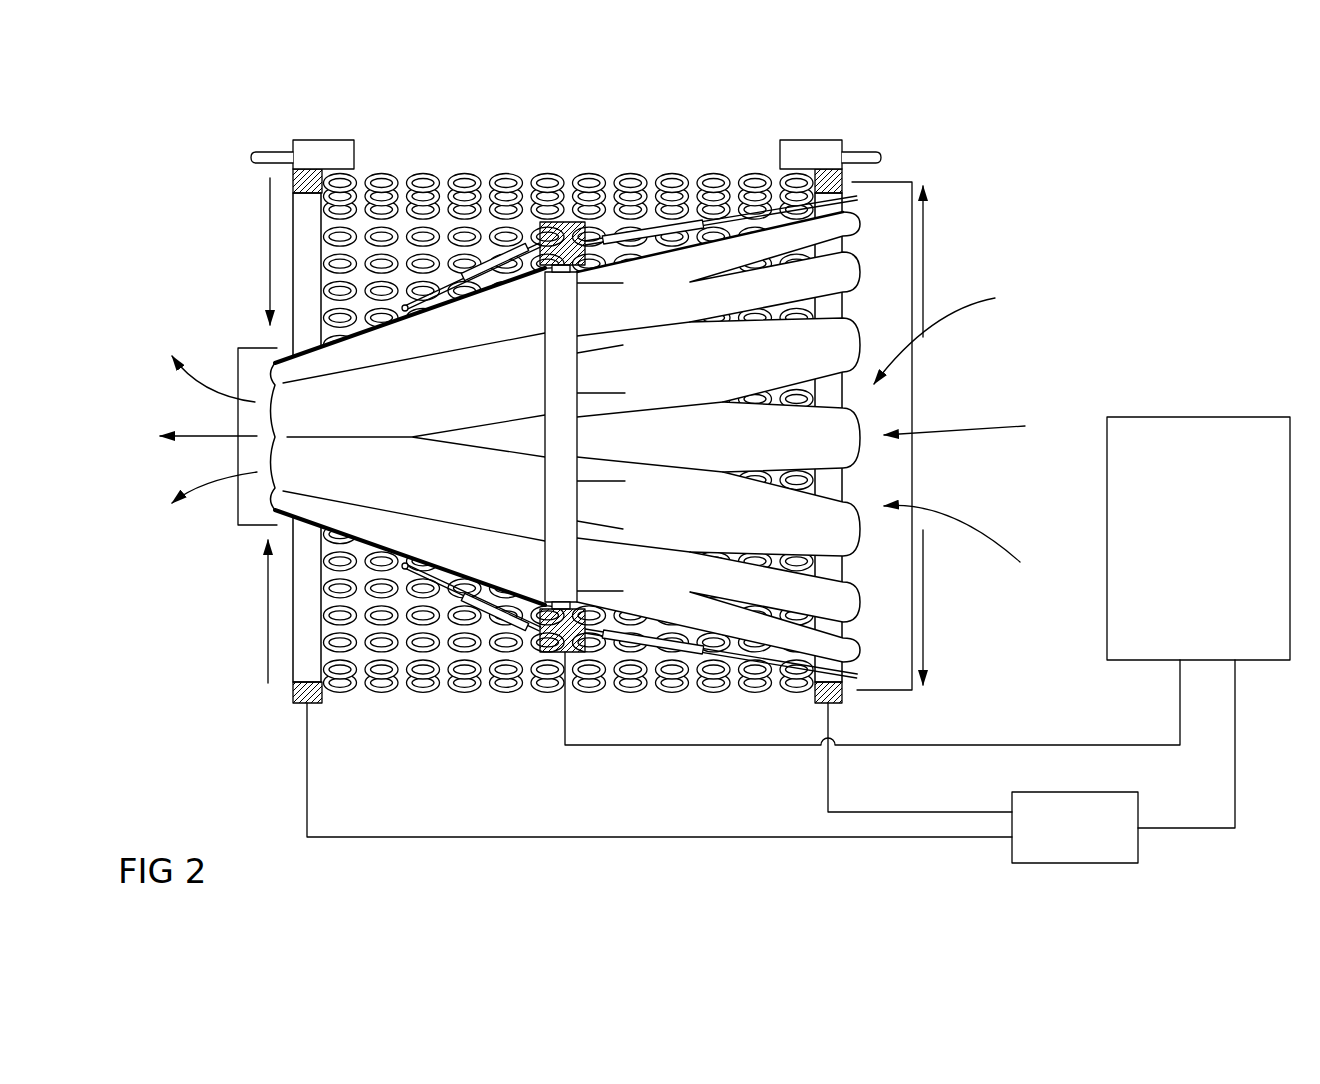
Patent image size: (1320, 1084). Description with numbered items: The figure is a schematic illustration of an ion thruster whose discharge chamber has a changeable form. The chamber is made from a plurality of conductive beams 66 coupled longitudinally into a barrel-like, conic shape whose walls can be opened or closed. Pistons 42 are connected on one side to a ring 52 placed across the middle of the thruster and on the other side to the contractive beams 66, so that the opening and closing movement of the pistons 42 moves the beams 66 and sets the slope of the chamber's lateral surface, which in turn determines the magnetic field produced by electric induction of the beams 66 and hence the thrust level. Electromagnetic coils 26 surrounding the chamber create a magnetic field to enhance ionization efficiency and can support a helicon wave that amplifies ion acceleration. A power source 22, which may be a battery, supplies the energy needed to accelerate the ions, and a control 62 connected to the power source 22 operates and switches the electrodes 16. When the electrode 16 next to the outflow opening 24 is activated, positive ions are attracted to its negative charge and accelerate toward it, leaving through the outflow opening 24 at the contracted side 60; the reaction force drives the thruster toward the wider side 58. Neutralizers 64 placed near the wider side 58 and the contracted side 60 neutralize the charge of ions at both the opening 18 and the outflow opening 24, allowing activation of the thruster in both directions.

The electrode 16 is at (293, 178).
The opening 18 is at (975, 390).
The power source 22 is at (1240, 435).
The outflow opening 24 is at (190, 403).
The electromagnetic coils 26 is at (385, 702).
The pistons 42 is at (480, 255).
The ring 52 is at (562, 322).
The wider side 58 is at (970, 277).
The contracted side 60 is at (210, 337).
The control 62 is at (1075, 812).
The neutralizer 64 is at (281, 157).
The conductive beams 66 is at (327, 416).